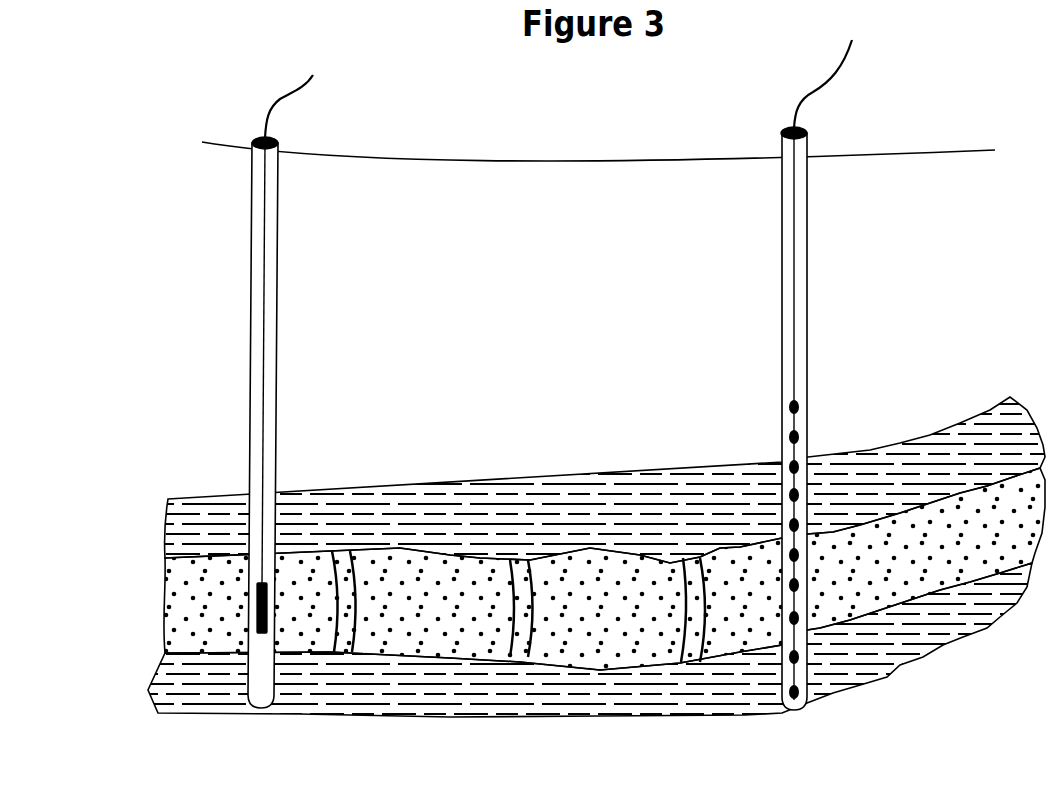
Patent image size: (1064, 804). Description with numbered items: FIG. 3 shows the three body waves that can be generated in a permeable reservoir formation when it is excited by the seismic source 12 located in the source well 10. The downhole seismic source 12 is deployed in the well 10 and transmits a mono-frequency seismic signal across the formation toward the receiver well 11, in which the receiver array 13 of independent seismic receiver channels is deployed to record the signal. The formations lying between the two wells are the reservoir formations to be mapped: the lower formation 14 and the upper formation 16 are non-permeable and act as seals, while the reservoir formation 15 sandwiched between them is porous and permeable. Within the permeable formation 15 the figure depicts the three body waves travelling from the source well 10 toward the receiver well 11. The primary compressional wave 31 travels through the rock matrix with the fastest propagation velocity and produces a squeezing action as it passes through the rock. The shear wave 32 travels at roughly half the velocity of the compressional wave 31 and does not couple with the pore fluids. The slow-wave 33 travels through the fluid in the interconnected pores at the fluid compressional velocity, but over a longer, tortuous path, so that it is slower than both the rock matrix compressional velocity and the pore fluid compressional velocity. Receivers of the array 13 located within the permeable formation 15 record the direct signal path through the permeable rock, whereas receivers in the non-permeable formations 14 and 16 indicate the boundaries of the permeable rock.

The source well 10 is at (284, 391).
The receiver well 11 is at (792, 375).
The downhole seismic source 12 is at (270, 636).
The receiver array 13 is at (792, 375).
The non-permeable reservoir formation 14 is at (590, 640).
The permeable reservoir formation 15 is at (604, 569).
The non-permeable reservoir formation 16 is at (605, 480).
The primary compressional wave 31 is at (681, 558).
The shear wave 32 is at (507, 560).
The slow-wave 33 is at (332, 552).